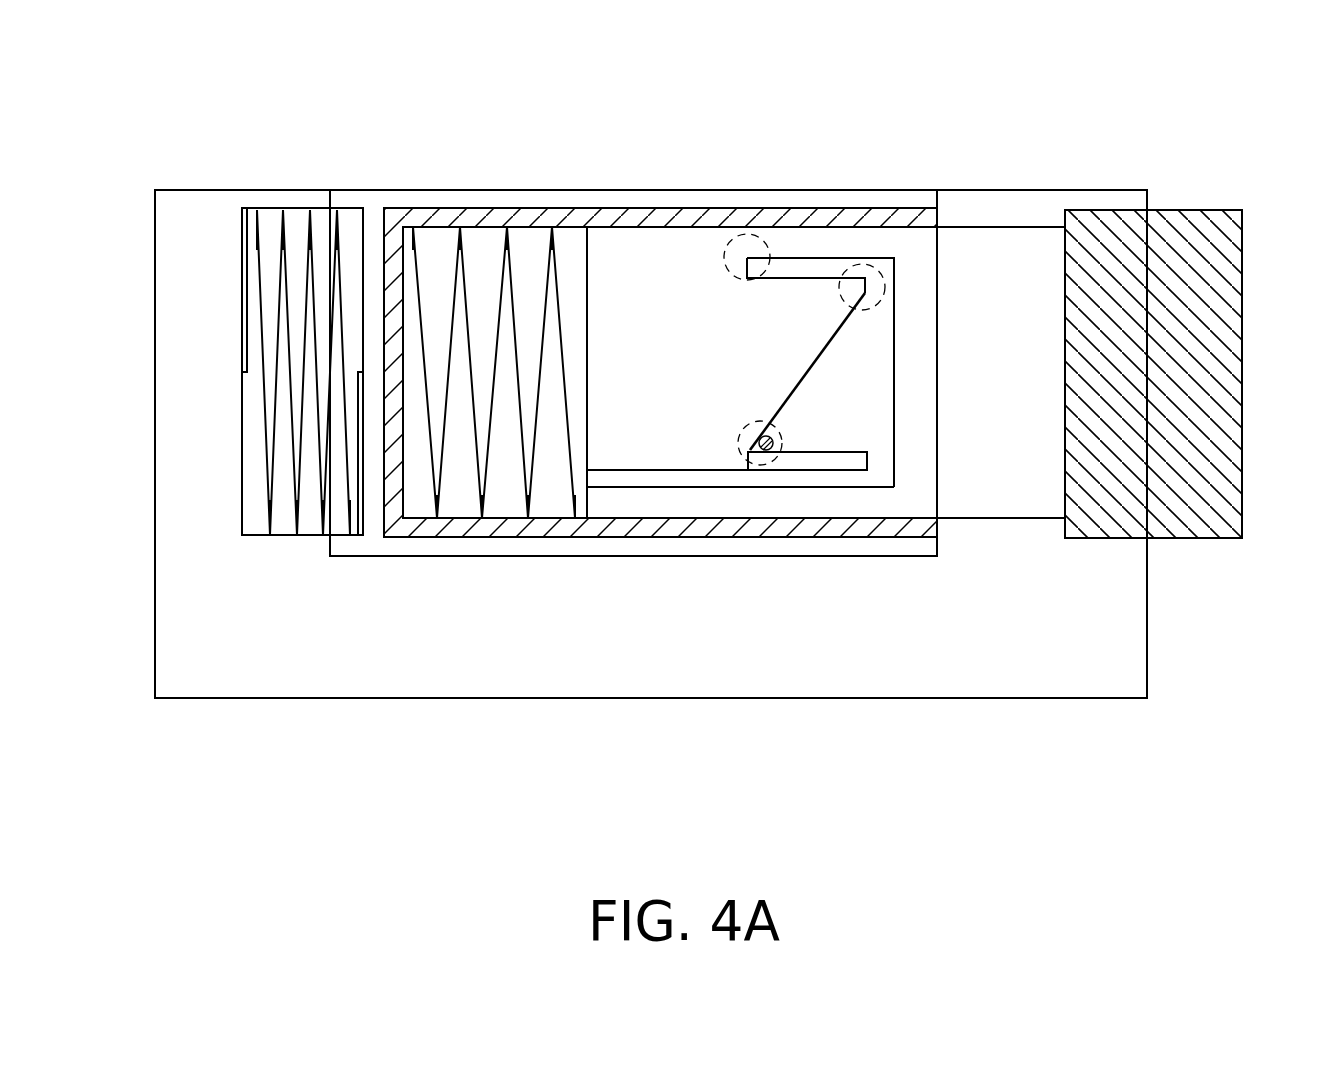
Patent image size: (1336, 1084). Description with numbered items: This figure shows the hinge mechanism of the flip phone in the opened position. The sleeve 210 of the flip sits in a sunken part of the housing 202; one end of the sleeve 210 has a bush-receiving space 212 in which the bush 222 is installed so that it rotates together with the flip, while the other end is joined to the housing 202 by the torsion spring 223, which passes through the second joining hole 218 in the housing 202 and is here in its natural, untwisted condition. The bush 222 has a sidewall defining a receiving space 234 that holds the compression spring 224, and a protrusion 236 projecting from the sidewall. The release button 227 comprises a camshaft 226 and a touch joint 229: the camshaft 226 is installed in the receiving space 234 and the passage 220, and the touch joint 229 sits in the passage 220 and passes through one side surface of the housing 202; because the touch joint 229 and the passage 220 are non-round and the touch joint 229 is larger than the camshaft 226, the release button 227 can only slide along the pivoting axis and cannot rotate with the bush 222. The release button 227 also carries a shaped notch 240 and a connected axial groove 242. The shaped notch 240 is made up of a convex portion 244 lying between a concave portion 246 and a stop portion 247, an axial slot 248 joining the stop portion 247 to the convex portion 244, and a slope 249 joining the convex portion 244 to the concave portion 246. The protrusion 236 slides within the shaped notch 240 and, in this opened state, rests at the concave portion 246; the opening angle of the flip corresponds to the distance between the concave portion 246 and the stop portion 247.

The housing 202 is at (1067, 682).
The sleeve 210 is at (650, 192).
The bush-receiving space 212 is at (1148, 622).
The second joining hole 218 is at (222, 363).
The passage 220 is at (1195, 386).
The bush 222 is at (803, 217).
The torsion spring 223 is at (283, 270).
The compression spring 224 is at (500, 283).
The camshaft 226 is at (913, 500).
The release button 227 is at (1254, 408).
The touch joint 229 is at (1183, 525).
The receiving space 234 is at (433, 438).
The protrusion 236 is at (756, 455).
The shaped notch 240 is at (864, 426).
The axial groove 242 is at (629, 493).
The convex portion 244 is at (898, 250).
The concave portion 246 is at (778, 473).
The stop portion 247 is at (749, 233).
The axial slot 248 is at (822, 263).
The slope 249 is at (807, 375).